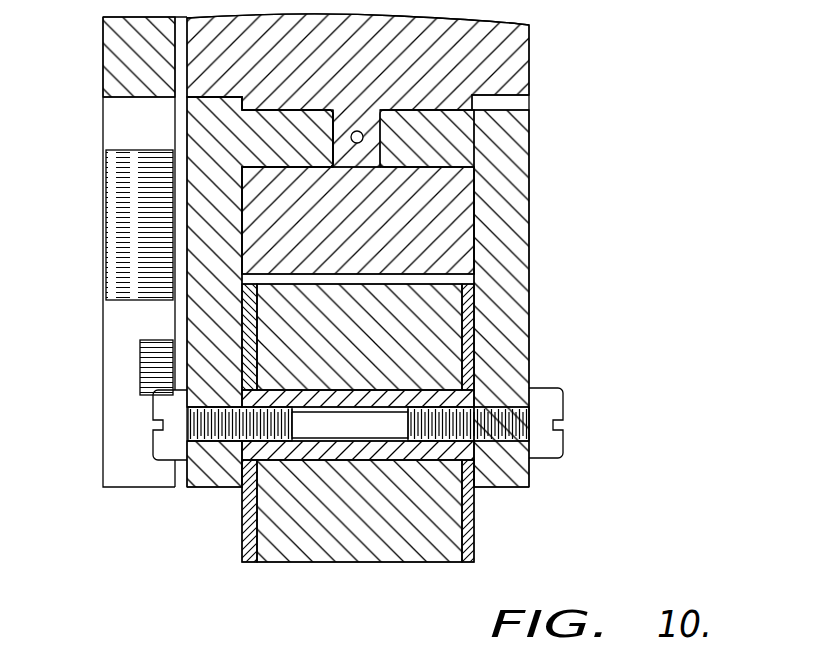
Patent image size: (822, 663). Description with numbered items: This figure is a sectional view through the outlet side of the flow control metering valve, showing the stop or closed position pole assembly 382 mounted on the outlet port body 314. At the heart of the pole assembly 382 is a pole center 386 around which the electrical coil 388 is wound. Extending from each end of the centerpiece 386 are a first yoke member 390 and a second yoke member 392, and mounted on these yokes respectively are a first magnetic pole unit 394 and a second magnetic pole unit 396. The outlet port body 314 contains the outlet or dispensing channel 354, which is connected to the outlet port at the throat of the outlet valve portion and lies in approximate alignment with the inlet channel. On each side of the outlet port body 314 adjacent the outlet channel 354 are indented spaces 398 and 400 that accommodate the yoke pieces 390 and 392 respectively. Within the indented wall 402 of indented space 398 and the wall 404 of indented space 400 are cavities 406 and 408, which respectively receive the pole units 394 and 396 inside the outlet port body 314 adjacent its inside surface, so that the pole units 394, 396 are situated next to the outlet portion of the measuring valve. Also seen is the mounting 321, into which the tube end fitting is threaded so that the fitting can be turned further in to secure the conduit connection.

The outlet port body 314 is at (510, 43).
The indented space 398 is at (510, 97).
The indented space 400 is at (203, 97).
The second magnetic pole unit 396 is at (297, 120).
The outlet or dispensing channel 354 is at (353, 132).
The first magnetic pole unit 394 is at (405, 117).
The cavity 406 is at (437, 112).
The wall 404 is at (242, 213).
The cavity 408 is at (312, 164).
The indented wall 402 is at (474, 207).
The first yoke member 390 is at (530, 260).
The second yoke member 392 is at (187, 275).
The stop or closed position pole assembly 382 is at (568, 358).
The pole center 386 is at (327, 390).
The mounting 321 is at (118, 422).
The electrical coil 388 is at (448, 527).